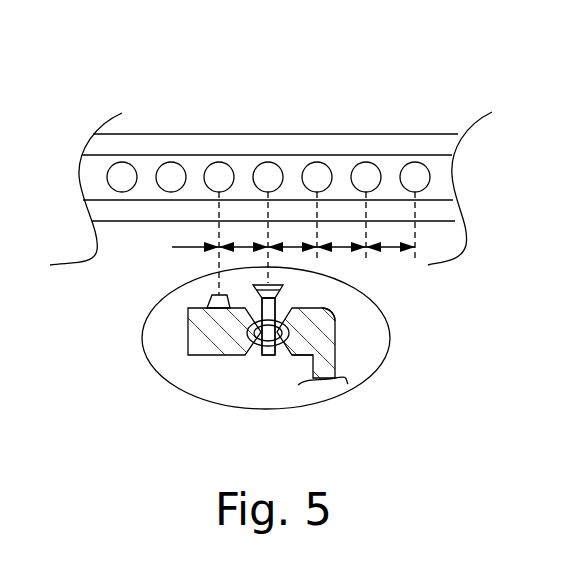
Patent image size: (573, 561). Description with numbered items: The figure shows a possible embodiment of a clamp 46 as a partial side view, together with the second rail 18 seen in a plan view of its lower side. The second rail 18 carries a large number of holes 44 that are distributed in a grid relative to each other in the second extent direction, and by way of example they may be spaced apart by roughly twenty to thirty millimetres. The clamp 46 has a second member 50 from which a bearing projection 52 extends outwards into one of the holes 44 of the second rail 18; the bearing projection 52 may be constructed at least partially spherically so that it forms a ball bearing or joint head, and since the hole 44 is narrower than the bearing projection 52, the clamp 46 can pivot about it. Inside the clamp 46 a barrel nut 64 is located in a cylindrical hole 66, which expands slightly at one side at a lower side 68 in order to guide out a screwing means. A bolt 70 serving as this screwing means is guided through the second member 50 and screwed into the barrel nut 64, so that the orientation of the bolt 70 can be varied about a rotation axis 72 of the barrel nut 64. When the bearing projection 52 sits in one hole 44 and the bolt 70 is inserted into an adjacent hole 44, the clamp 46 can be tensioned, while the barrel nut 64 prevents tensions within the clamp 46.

The second rail 18 is at (343, 145).
The hole 44 is at (170, 173).
The clamp 46 is at (334, 322).
The second member 50 is at (206, 332).
The bearing projection 52 is at (212, 297).
The barrel nut 64 is at (320, 327).
The cylindrical hole 66 is at (250, 334).
The lower side 68 is at (285, 366).
The bolt 70 is at (253, 294).
The rotation axis 72 is at (272, 333).